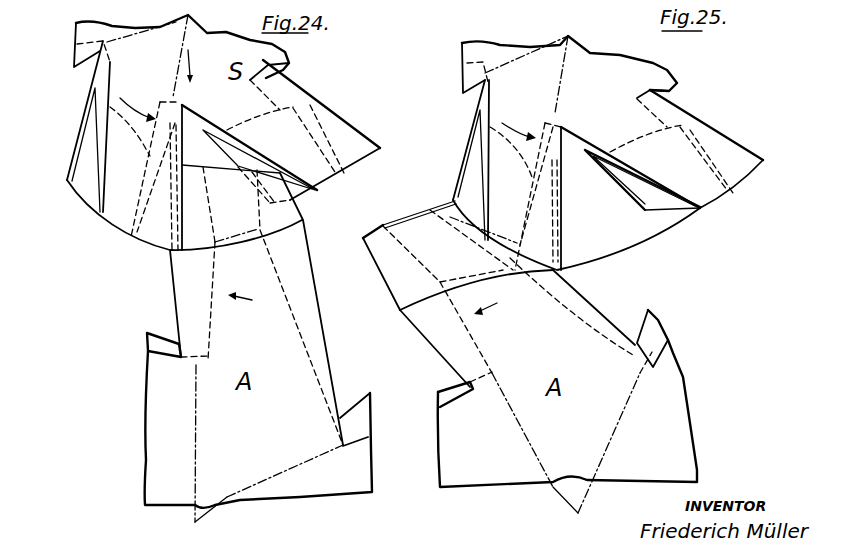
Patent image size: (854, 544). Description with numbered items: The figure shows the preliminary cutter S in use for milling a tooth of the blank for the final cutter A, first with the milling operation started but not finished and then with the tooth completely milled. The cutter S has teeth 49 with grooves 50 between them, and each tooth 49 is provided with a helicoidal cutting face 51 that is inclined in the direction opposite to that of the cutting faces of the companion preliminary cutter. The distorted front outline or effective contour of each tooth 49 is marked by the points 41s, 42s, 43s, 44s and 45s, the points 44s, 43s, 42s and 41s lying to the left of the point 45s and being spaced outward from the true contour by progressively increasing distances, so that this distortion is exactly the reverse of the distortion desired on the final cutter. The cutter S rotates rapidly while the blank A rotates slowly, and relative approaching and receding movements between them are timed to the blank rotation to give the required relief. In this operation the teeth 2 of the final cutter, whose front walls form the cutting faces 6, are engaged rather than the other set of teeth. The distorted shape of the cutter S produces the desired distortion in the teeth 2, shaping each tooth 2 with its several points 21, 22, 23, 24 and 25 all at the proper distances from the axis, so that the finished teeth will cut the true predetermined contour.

In FIG. 25, the teeth 2 is at (427, 205).
In FIG. 24, the cutting face 6 is at (183, 282).
In FIG. 25, the cutting face 6 is at (392, 270).
In FIG. 25, the point of tooth contour 21 is at (441, 282).
In FIG. 25, the point of tooth contour 22 is at (380, 222).
In FIG. 25, the point of tooth contour 23 is at (380, 225).
In FIG. 25, the point of tooth contour 24 is at (363, 238).
In FIG. 24, the point of tooth contour 25 is at (170, 250).
In FIG. 25, the point of tooth contour 25 is at (402, 310).
In FIG. 24, the point of distorted front outline 41s is at (132, 233).
In FIG. 25, the point of distorted front outline 41s is at (522, 252).
In FIG. 24, the point of distorted front outline 42s is at (155, 162).
In FIG. 25, the point of distorted front outline 42s is at (533, 186).
In FIG. 24, the point of distorted front outline 43s is at (170, 160).
In FIG. 25, the point of distorted front outline 43s is at (544, 181).
In FIG. 24, the point of distorted front outline 44s is at (182, 165).
In FIG. 25, the point of distorted front outline 44s is at (561, 183).
In FIG. 24, the point of distorted front outline 45s is at (170, 250).
In FIG. 25, the point of distorted front outline 45s is at (557, 268).
In FIG. 24, the teeth 49 is at (113, 212).
In FIG. 25, the teeth 49 is at (460, 155).
In FIG. 25, the grooves 50 is at (613, 217).
In FIG. 25, the helicoidal cutting faces 51 is at (562, 213).